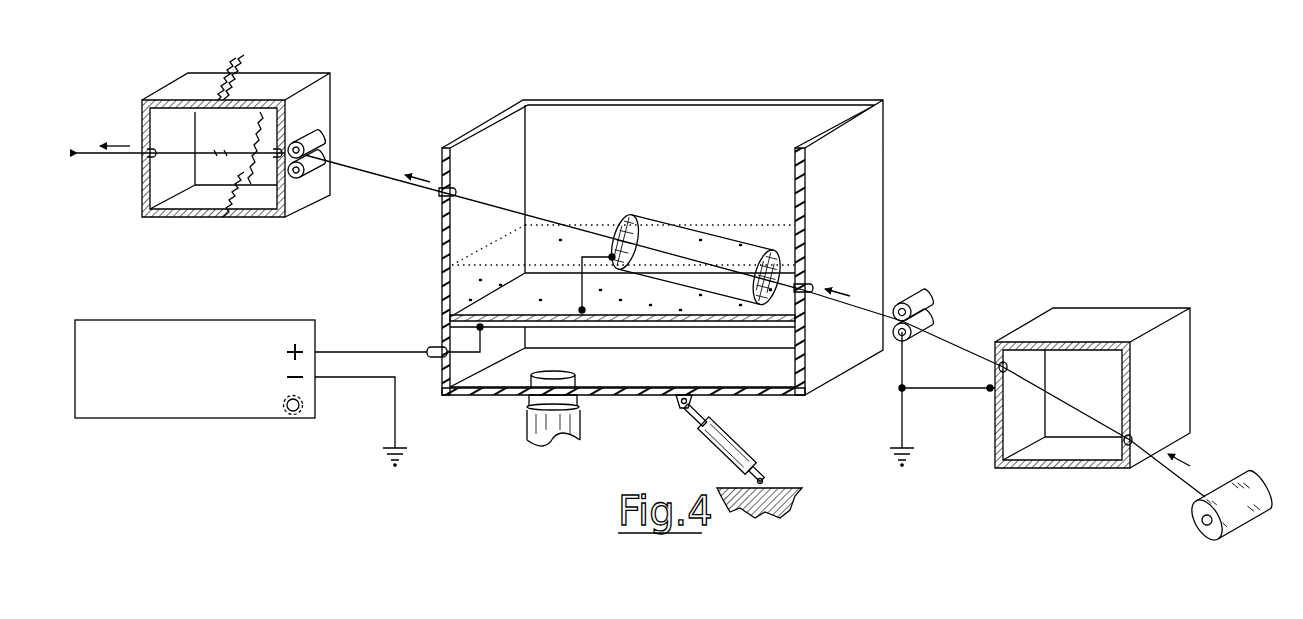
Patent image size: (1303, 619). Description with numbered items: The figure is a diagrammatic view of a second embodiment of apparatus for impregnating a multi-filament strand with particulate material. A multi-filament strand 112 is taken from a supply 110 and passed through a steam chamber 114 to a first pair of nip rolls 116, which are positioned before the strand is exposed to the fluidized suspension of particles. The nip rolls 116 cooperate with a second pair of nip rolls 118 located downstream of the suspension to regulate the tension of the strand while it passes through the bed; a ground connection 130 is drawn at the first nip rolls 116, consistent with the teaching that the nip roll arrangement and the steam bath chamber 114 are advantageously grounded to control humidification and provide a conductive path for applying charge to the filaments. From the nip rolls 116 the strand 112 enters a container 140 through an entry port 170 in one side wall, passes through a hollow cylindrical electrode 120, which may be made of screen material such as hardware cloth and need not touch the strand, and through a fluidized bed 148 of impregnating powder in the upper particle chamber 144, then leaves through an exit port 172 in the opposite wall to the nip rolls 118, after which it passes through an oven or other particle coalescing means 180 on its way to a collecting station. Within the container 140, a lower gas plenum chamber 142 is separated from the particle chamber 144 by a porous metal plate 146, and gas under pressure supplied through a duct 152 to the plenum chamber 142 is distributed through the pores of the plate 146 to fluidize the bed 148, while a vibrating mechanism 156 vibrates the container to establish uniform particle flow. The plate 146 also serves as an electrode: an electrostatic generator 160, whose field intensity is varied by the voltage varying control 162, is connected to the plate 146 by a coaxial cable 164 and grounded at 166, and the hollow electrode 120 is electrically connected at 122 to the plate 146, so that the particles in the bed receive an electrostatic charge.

The supply of multi-filament strand 110 is at (1222, 538).
The multi-filament strand 112 is at (385, 140).
The steam chamber 114 is at (1146, 306).
The pair of nip rolls 116 is at (912, 293).
The pair of nip rolls 118 is at (305, 140).
The hollow cylindrical electrode 120 is at (618, 213).
The electrical connection 122 is at (580, 312).
The ground connection 130 is at (897, 447).
The container 140 is at (890, 124).
The lower gas plenum chamber 142 is at (658, 376).
The particle chamber 144 is at (608, 190).
The porous metal plate 146 is at (683, 322).
The fluidized bed 148 is at (485, 283).
The duct 152 is at (526, 430).
The vibrating mechanism 156 is at (742, 450).
The electrostatic generator 160 is at (205, 318).
The voltage varying control 162 is at (283, 398).
The coaxial cable 164 is at (385, 350).
The ground 166 is at (395, 440).
The entry port 170 is at (803, 296).
The exit port 172 is at (440, 193).
The oven or particle coalescing means 180 is at (212, 66).